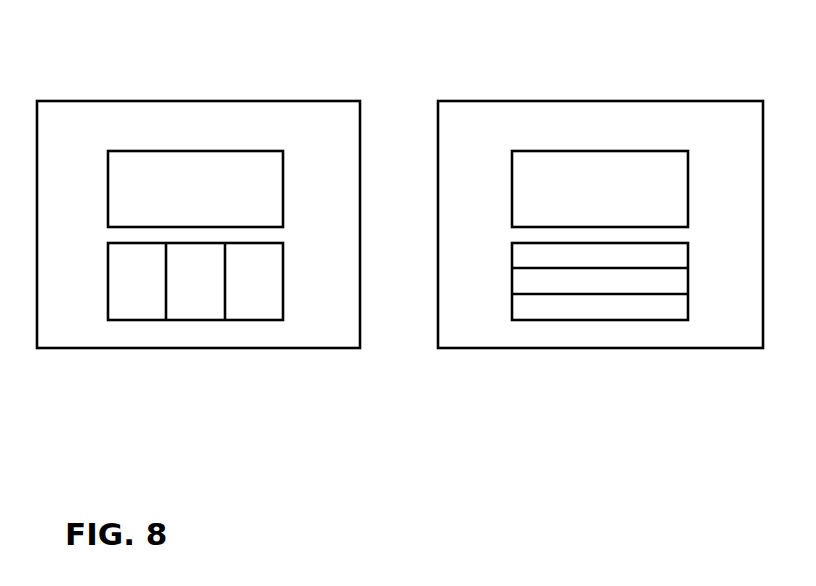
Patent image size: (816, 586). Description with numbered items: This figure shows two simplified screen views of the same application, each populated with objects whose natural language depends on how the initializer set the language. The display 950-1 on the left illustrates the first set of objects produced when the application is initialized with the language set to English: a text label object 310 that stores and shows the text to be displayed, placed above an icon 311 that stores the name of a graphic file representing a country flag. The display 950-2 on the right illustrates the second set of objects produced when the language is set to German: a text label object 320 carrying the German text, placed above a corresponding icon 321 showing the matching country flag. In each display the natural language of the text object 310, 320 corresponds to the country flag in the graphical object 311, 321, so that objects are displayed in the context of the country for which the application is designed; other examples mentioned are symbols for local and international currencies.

The display 950-1 is at (180, 101).
The text label object 310 is at (283, 168).
The icon 311 is at (283, 308).
The display 950-2 is at (580, 101).
The text label object 320 is at (688, 168).
The icon 321 is at (688, 308).